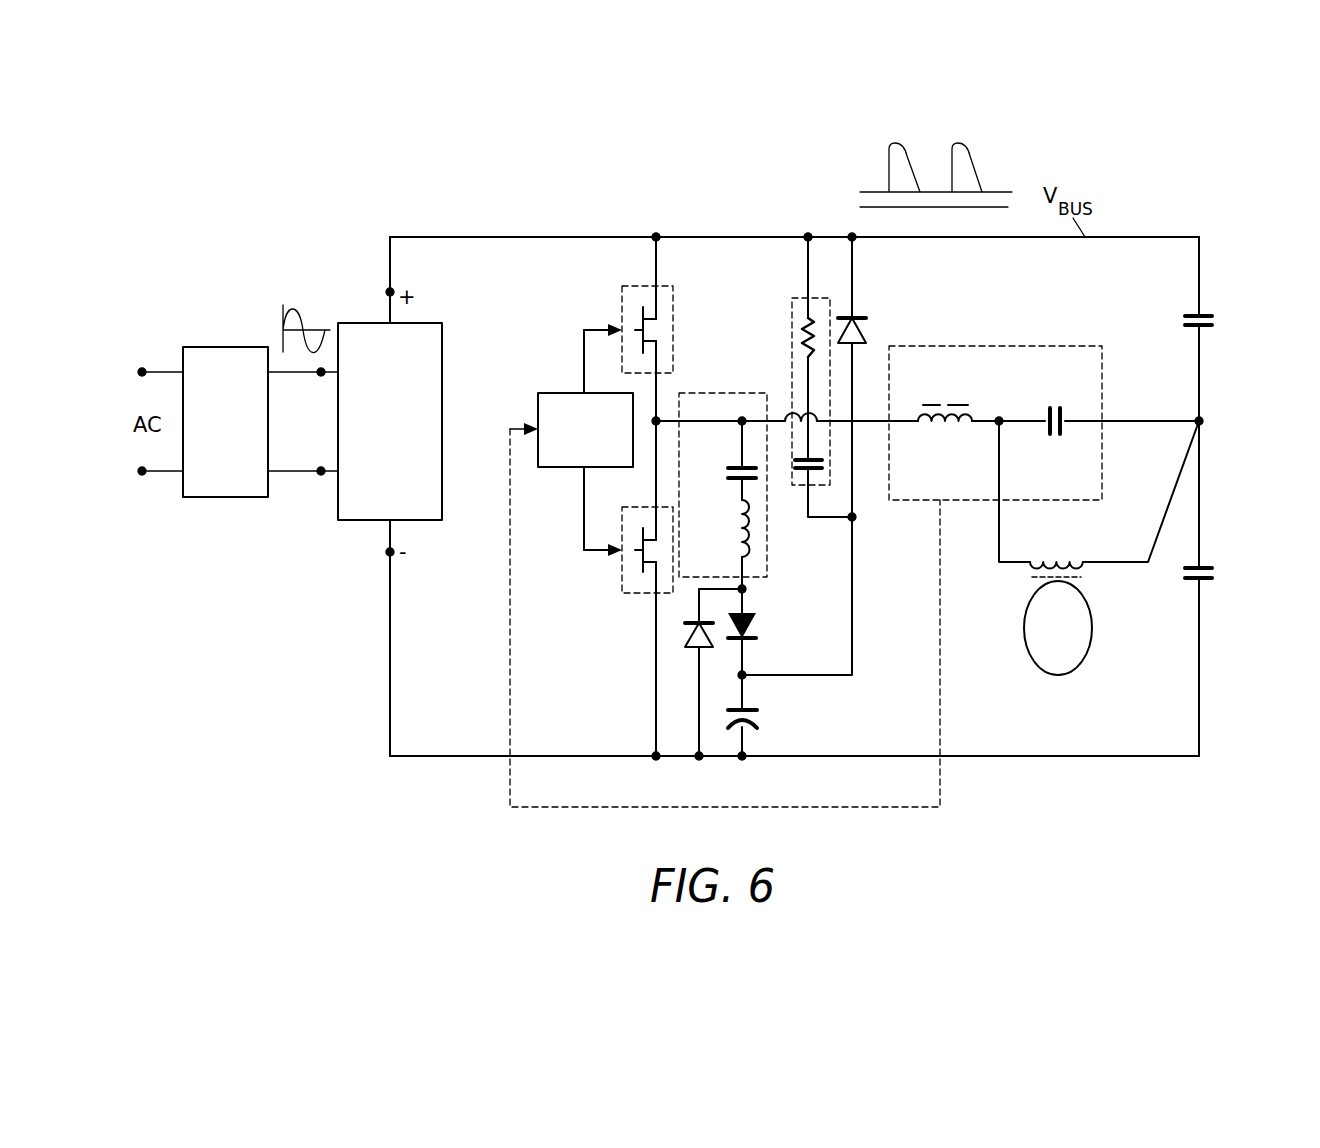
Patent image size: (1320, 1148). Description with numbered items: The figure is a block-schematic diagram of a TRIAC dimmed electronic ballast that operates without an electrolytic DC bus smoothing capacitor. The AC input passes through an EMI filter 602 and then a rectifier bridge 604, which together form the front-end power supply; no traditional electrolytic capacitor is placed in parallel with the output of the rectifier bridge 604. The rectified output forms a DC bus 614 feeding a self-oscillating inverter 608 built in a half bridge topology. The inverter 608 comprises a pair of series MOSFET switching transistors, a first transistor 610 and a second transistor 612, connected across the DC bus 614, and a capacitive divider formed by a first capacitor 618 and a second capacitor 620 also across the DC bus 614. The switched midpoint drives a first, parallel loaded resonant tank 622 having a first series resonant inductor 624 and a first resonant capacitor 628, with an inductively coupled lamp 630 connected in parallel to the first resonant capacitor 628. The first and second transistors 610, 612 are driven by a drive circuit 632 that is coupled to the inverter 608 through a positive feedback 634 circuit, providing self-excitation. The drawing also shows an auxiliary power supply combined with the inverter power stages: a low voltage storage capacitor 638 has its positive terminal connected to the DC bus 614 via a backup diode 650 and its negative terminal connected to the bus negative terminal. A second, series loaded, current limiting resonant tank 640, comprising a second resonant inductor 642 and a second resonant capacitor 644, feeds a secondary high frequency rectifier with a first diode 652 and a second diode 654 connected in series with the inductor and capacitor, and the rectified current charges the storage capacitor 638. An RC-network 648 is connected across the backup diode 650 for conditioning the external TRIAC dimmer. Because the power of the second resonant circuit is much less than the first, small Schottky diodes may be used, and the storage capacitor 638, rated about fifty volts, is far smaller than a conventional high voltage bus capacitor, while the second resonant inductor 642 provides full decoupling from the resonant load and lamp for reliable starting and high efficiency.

The EMI filter 602 is at (226, 346).
The rectifier bridge 604 is at (355, 323).
The self-oscillating inverter 608 is at (699, 222).
The transistor Q1 610 is at (622, 286).
The transistor Q2 612 is at (625, 593).
The DC bus 614 is at (1140, 237).
The capacitor C1 618 is at (1185, 323).
The capacitor C2 620 is at (1185, 576).
The first parallel loaded resonant tank 622 is at (995, 401).
The first series resonant inductor LR1 624 is at (947, 425).
The first resonant capacitor CR1 628 is at (1058, 438).
The lamp 630 is at (1023, 628).
The drive circuit 632 is at (550, 393).
The positive feedback circuit 634 is at (875, 808).
The storage capacitor CST 638 is at (758, 708).
The second series loaded current limiting resonant tank 640 is at (723, 468).
The second resonant inductor LR2 642 is at (735, 517).
The second resonant capacitor CR2 644 is at (733, 467).
The RC-network 648 is at (792, 298).
The backup diode D 650 is at (858, 318).
The diode D1 652 is at (754, 613).
The diode D2 654 is at (686, 629).